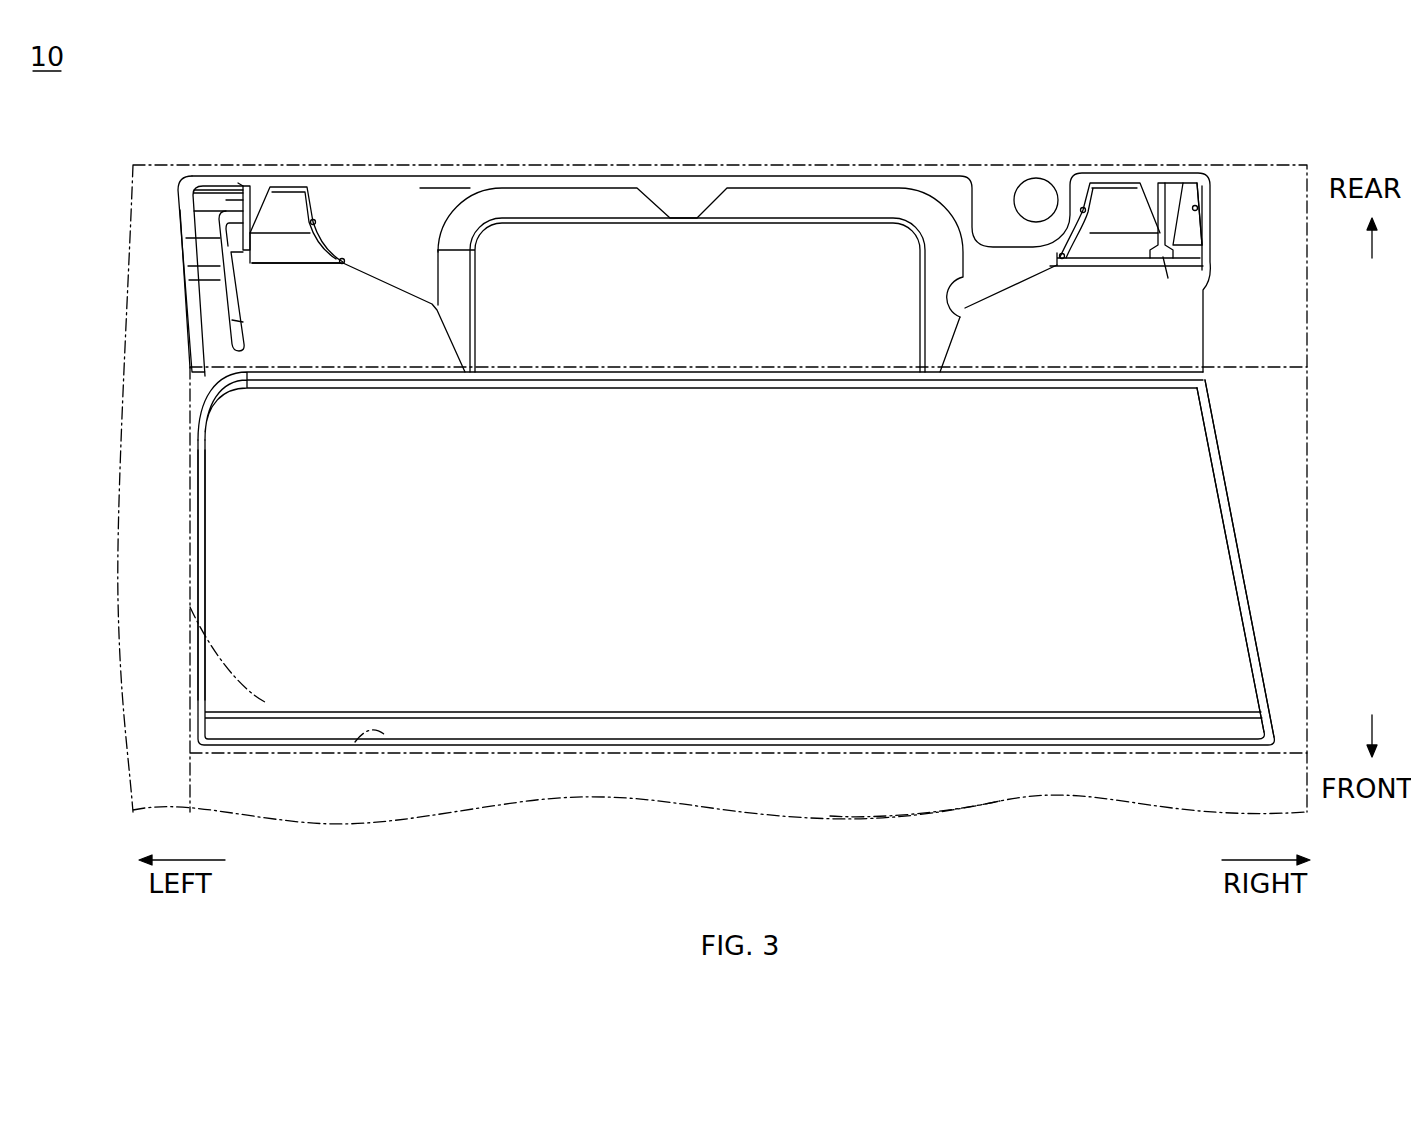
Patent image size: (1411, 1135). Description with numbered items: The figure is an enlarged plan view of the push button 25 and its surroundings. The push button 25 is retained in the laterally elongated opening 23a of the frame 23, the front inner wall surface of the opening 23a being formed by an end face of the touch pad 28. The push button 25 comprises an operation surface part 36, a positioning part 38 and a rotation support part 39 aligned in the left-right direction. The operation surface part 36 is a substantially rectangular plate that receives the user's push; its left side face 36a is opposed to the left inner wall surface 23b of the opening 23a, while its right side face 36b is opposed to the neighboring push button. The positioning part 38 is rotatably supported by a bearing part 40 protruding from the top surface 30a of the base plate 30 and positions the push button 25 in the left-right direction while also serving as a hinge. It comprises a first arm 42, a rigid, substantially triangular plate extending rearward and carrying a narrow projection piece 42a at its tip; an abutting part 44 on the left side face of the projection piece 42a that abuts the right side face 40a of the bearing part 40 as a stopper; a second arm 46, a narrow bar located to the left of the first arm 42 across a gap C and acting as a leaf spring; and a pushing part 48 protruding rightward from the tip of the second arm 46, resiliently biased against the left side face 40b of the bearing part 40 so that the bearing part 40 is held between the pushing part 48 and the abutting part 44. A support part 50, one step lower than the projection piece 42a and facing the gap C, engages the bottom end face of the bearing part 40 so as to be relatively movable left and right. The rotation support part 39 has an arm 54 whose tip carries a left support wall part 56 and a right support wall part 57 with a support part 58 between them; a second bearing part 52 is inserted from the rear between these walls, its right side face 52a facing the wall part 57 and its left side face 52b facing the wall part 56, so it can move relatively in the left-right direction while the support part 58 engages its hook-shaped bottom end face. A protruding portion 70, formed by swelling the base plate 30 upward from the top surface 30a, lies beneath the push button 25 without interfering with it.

The frame 23 is at (124, 737).
The opening 23a is at (385, 735).
The left inner wall surface 23b is at (267, 703).
The push button 25 is at (1245, 433).
The touch pad 28 is at (913, 783).
The base plate 30 is at (365, 207).
The top surface 30a is at (440, 188).
The operation surface part 36 is at (705, 647).
The left side face 36a is at (200, 444).
The right side face 36b is at (1241, 553).
The positioning part 38 is at (174, 189).
The rotation support part 39 is at (1175, 186).
The bearing part 40 is at (233, 198).
The right side face 40a is at (252, 230).
The left side face 40b is at (230, 200).
The first arm 42 is at (313, 322).
The projection piece 42a is at (255, 234).
The abutting part 44 is at (272, 198).
The second arm 46 is at (203, 288).
The pushing part 48 is at (246, 186).
The support part 50 is at (235, 240).
The bearing part 52 is at (1161, 183).
The right side face 52a is at (1199, 212).
The left side face 52b is at (1150, 206).
The arm 54 is at (1100, 337).
The left support wall part 56 is at (1112, 207).
The right support wall part 57 is at (1185, 203).
The support part 58 is at (1163, 257).
The protruding portion 70 is at (622, 247).
The gap C is at (240, 319).